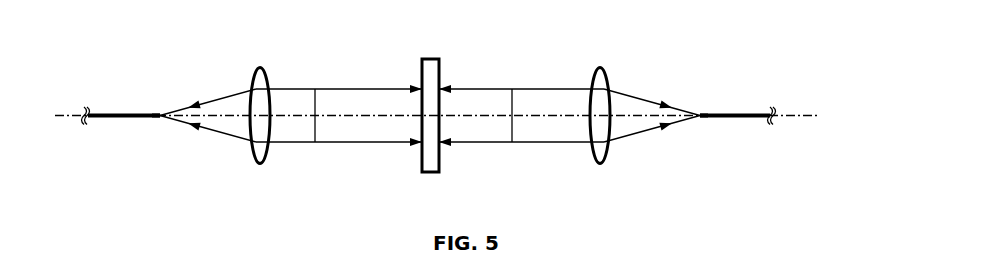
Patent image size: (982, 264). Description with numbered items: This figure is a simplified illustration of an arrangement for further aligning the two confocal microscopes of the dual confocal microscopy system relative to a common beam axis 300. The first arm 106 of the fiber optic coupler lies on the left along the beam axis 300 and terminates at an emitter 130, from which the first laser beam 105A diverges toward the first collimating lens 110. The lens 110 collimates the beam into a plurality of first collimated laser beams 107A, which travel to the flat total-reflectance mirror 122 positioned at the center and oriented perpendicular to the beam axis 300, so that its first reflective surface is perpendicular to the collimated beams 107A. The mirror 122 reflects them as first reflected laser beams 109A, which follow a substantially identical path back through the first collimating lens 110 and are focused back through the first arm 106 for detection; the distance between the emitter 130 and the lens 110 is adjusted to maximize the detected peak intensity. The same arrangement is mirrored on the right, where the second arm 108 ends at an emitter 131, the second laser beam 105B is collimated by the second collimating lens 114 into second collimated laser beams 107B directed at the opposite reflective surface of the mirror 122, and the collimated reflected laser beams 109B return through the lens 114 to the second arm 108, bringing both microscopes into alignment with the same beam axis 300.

The first arm 106 is at (138, 113).
The second arm 108 is at (727, 112).
The first collimating lens 110 is at (268, 85).
The second collimating lens 114 is at (593, 83).
The flat total-reflectance mirror 122 is at (428, 58).
The first laser beam 105A is at (223, 103).
The first reflected laser beams 109A is at (215, 135).
The first collimated laser beams 107A is at (298, 140).
The second collimated laser beams 107B is at (495, 140).
The second laser beam 105B is at (625, 105).
The collimated reflected laser beams 109B is at (645, 133).
The emitter 130 is at (160, 118).
The emitter 131 is at (702, 120).
The beam axis 300 is at (798, 112).